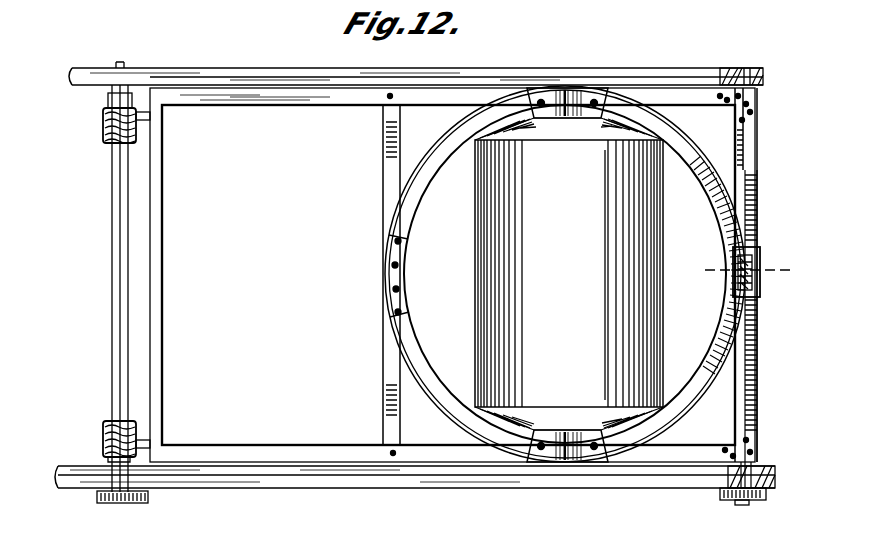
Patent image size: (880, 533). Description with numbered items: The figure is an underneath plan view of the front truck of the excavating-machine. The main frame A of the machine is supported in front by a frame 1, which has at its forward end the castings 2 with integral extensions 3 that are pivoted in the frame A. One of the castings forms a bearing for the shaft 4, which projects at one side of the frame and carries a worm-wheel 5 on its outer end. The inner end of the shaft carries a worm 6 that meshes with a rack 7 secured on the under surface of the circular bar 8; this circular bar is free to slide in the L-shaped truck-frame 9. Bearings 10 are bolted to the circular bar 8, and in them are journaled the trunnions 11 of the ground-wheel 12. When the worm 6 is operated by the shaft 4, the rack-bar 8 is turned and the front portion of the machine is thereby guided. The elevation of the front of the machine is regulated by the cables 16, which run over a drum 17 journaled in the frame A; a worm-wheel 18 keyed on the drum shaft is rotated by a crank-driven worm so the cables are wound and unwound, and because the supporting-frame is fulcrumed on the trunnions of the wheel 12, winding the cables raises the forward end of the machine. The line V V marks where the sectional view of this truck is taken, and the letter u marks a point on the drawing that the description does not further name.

The frame 1 is at (328, 92).
The castings 2 is at (757, 97).
The integral extensions 3 is at (748, 68).
The shaft 4 is at (757, 375).
The worm-wheel 5 is at (760, 495).
The worm 6 is at (753, 262).
The rack 7 is at (718, 212).
The circular bar 8 is at (696, 152).
The L-shaped truck-frame 9 is at (410, 356).
The bearings 10 is at (600, 102).
The trunnions 11 is at (553, 88).
The ground-wheel 12 is at (569, 274).
The cables 16 is at (104, 124).
The drum 17 is at (112, 235).
The worm-wheel 18 is at (138, 502).
The frame of the excavating-machine A is at (230, 70).
The gap u is at (565, 86).
The section line V V is at (747, 270).